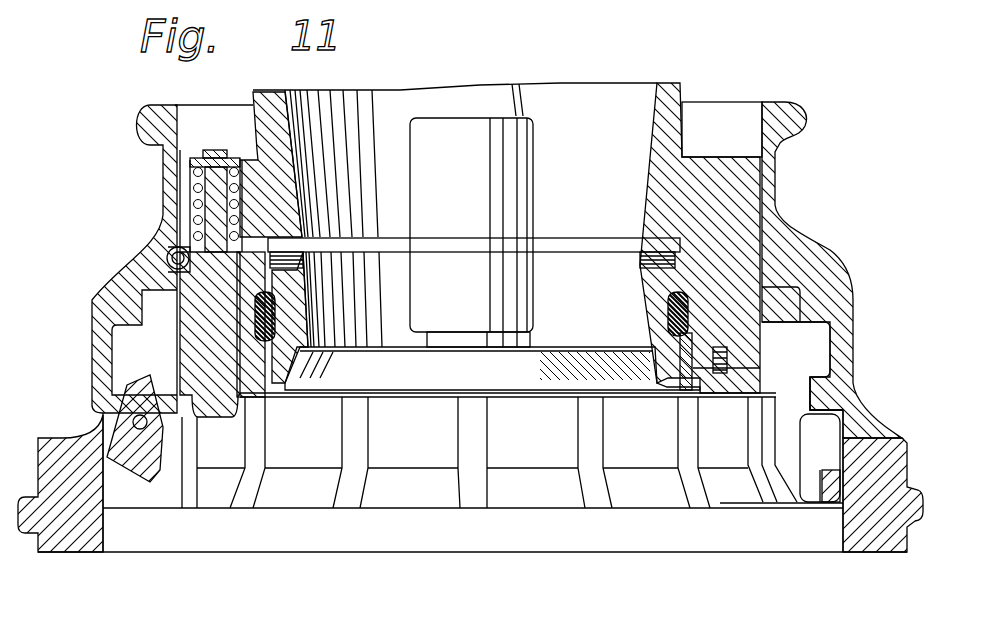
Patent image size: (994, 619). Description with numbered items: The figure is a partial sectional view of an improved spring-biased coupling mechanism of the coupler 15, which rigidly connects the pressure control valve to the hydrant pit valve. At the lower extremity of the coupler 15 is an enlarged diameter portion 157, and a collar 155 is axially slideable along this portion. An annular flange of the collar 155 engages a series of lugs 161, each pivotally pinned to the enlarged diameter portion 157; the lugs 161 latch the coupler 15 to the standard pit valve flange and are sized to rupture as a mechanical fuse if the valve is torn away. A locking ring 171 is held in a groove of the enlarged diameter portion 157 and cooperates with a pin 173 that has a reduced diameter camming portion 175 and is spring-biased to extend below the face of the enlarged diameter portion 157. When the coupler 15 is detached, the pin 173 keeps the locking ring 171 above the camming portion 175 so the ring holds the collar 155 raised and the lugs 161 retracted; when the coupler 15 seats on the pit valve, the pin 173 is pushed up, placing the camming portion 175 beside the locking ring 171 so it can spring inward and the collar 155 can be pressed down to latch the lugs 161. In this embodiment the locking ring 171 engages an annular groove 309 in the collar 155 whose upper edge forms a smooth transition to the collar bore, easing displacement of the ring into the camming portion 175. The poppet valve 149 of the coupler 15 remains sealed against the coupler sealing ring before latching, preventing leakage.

The coupler 15 is at (822, 129).
The poppet valve 149 is at (398, 362).
The collar 155 is at (833, 394).
The enlarged diameter portion 157 is at (680, 88).
The lugs 161 is at (123, 443).
The locking ring 171 is at (170, 257).
The pin 173 is at (208, 344).
The reduced diameter camming portion 175 is at (178, 290).
The annular groove 309 is at (178, 247).